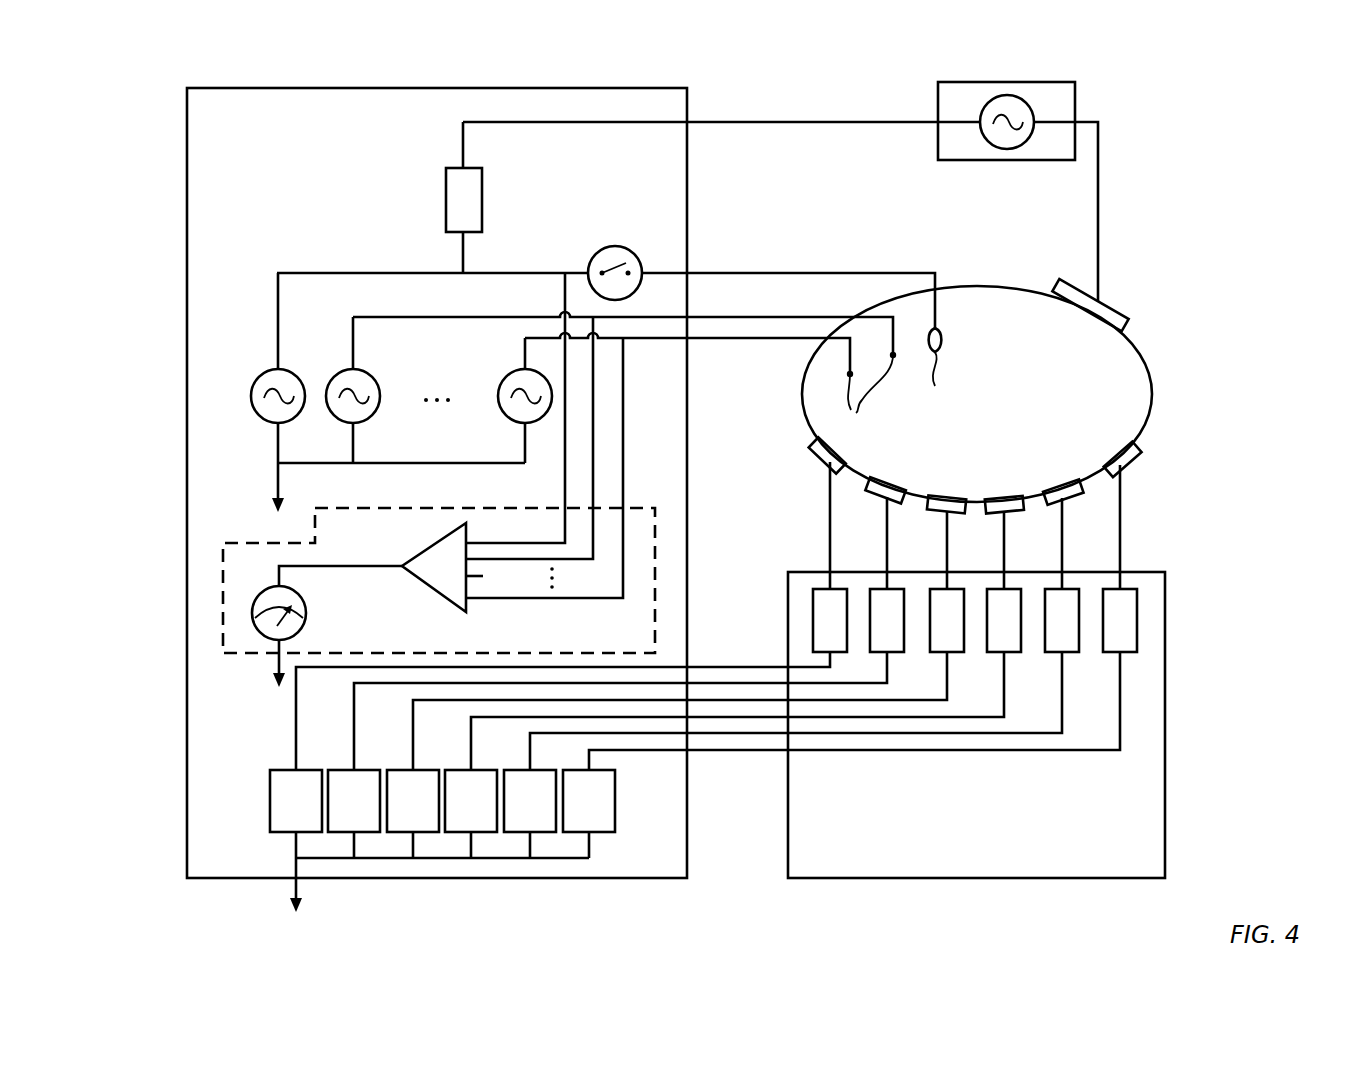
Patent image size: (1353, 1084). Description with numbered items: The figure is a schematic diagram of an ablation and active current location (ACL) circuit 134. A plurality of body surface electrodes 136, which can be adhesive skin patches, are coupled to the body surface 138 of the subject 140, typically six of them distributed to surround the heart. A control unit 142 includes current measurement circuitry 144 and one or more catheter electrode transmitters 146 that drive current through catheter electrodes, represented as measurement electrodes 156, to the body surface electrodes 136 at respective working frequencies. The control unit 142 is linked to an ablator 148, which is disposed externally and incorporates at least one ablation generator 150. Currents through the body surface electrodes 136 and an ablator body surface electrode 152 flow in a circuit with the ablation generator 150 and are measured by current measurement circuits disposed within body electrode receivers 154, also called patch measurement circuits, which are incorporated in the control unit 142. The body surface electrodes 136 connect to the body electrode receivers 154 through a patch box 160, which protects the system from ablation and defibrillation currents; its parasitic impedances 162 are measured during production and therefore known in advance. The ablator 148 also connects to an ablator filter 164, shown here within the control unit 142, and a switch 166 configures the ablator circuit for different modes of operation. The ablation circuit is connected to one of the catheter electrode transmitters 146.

The ablation and active current location (ACL) circuit 134 is at (133, 133).
The body surface electrodes 136 is at (822, 458).
The body surface 138 is at (1152, 396).
The subject 140 is at (993, 286).
The control unit 142 is at (187, 798).
The current measurement circuitry 144 is at (223, 600).
The catheter electrode transmitters 146 is at (293, 372).
The ablator 148 is at (1075, 96).
The ablation generator 150 is at (1000, 149).
The ablator body surface electrode 152 is at (1127, 318).
The body electrode receivers 154 is at (318, 814).
The measurement electrodes 156 is at (900, 396).
The patch box 160 is at (1165, 792).
The patch box parasitic impedances 162 is at (813, 620).
The ablator filter 164 is at (446, 200).
The switch 166 is at (618, 247).